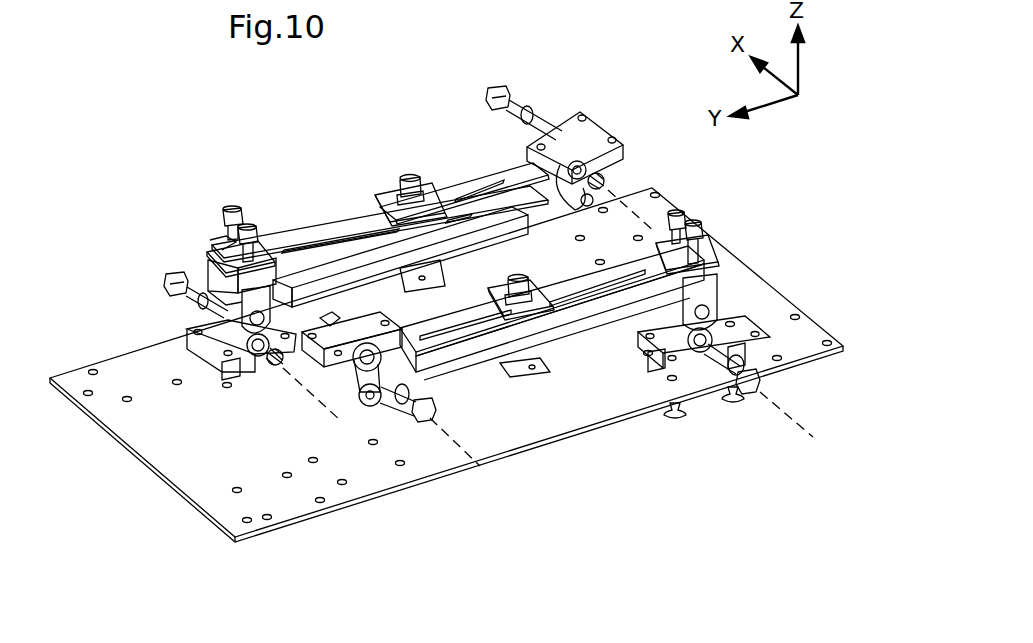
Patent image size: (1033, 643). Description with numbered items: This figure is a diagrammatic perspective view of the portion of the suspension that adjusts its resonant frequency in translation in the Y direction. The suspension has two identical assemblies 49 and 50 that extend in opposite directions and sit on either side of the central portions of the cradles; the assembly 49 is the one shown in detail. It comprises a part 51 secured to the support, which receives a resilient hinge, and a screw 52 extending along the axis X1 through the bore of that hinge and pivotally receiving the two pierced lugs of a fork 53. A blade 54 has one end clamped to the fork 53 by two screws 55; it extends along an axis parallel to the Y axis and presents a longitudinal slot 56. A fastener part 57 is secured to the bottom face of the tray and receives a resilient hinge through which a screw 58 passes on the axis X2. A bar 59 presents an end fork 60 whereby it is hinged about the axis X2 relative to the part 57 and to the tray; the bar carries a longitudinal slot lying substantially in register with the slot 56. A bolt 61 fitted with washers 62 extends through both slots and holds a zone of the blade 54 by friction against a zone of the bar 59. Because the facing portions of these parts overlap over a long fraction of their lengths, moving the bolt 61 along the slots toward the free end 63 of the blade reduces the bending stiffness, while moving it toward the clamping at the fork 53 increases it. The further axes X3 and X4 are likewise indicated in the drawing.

The assembly 49 is at (636, 112).
The assembly 50 is at (752, 259).
The part 51 is at (210, 372).
The screw 52 is at (164, 277).
The fork 53 is at (210, 266).
The blade 54 is at (297, 236).
The screws 55 is at (232, 208).
The longitudinal slot 56 is at (343, 233).
The fastener part 57 is at (597, 128).
The screw 58 is at (522, 92).
The bar 59 is at (530, 236).
The end fork 60 is at (578, 216).
The bolt 61 is at (411, 178).
The washers 62 is at (492, 286).
The free end 63 is at (490, 178).
The axis X1 is at (328, 412).
The axis X2 is at (627, 192).
The pivot axis X3 is at (797, 427).
The pivot axis X4 is at (484, 464).